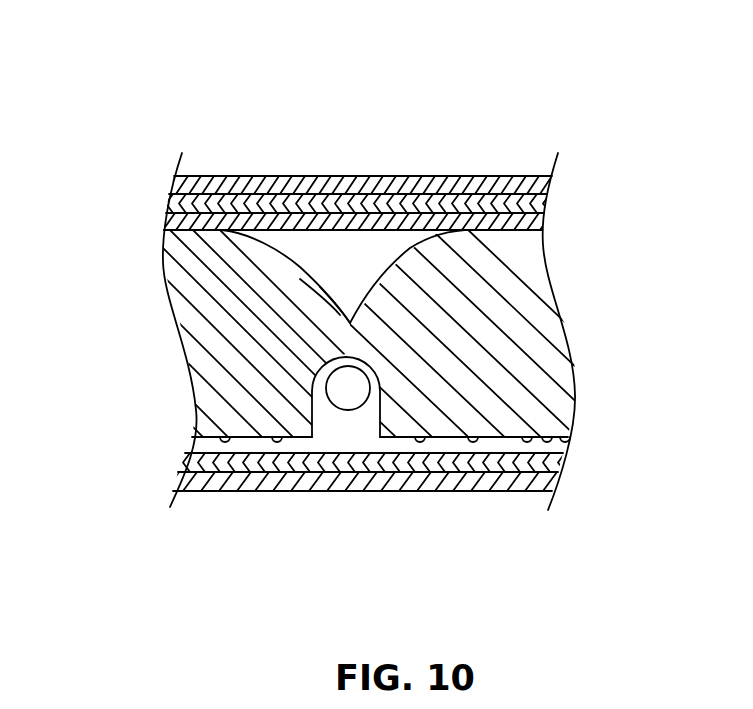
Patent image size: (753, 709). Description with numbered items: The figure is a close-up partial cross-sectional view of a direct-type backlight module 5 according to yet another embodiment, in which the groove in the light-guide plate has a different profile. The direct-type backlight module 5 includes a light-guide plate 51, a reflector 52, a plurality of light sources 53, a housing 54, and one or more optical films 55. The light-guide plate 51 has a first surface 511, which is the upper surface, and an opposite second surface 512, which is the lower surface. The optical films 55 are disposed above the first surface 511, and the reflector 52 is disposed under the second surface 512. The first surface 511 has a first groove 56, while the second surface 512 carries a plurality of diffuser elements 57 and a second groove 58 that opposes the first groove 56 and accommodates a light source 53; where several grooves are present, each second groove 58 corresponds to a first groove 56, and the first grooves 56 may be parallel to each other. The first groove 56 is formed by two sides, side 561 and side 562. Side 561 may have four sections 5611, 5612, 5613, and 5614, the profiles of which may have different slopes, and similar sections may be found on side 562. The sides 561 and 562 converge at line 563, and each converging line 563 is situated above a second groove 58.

The direct-type backlight module 5 is at (586, 122).
The light-guide plate 51 is at (517, 395).
The first surface 511 is at (487, 176).
The second surface 512 is at (489, 438).
The reflector 52 is at (540, 461).
The light source 53 is at (352, 392).
The housing 54 is at (540, 487).
The optical films 55 is at (567, 180).
The first groove 56 is at (326, 250).
The side 561 is at (300, 292).
The section 5611 is at (250, 232).
The section 5612 is at (280, 277).
The section 5613 is at (322, 291).
The section 5614 is at (312, 358).
The side 562 is at (420, 275).
The line 563 is at (312, 437).
The diffuser elements 57 is at (222, 440).
The second groove 58 is at (353, 423).